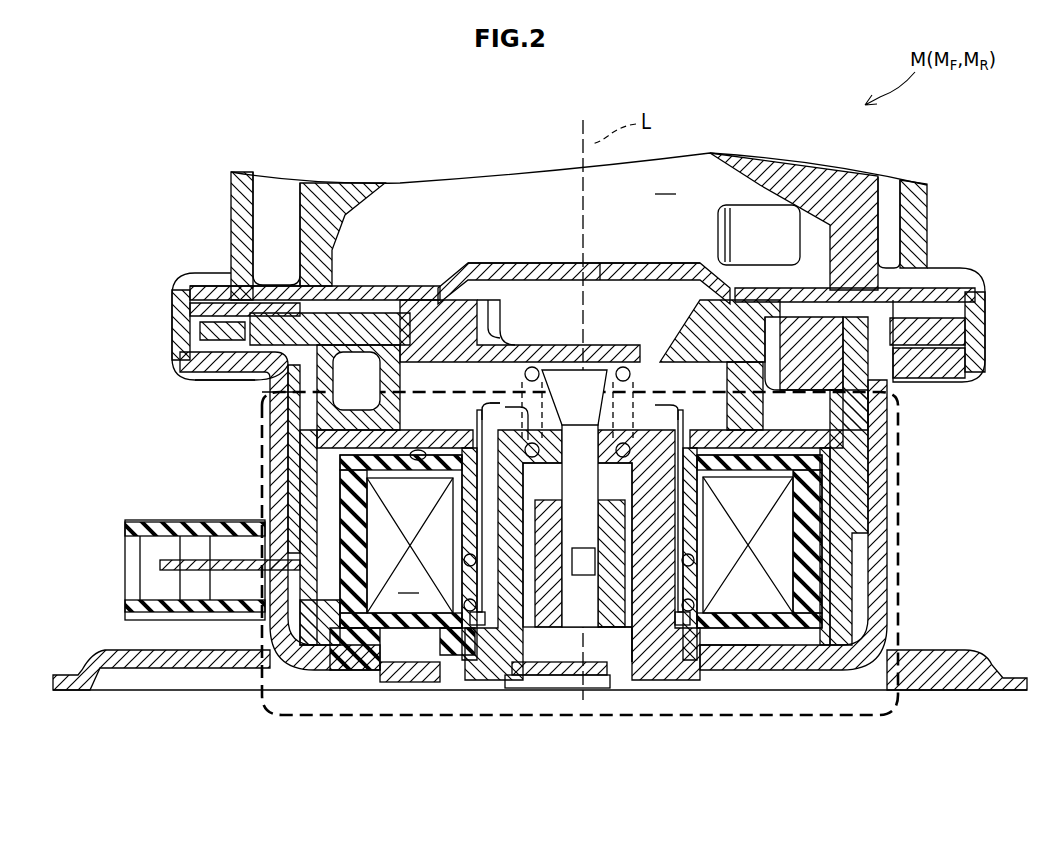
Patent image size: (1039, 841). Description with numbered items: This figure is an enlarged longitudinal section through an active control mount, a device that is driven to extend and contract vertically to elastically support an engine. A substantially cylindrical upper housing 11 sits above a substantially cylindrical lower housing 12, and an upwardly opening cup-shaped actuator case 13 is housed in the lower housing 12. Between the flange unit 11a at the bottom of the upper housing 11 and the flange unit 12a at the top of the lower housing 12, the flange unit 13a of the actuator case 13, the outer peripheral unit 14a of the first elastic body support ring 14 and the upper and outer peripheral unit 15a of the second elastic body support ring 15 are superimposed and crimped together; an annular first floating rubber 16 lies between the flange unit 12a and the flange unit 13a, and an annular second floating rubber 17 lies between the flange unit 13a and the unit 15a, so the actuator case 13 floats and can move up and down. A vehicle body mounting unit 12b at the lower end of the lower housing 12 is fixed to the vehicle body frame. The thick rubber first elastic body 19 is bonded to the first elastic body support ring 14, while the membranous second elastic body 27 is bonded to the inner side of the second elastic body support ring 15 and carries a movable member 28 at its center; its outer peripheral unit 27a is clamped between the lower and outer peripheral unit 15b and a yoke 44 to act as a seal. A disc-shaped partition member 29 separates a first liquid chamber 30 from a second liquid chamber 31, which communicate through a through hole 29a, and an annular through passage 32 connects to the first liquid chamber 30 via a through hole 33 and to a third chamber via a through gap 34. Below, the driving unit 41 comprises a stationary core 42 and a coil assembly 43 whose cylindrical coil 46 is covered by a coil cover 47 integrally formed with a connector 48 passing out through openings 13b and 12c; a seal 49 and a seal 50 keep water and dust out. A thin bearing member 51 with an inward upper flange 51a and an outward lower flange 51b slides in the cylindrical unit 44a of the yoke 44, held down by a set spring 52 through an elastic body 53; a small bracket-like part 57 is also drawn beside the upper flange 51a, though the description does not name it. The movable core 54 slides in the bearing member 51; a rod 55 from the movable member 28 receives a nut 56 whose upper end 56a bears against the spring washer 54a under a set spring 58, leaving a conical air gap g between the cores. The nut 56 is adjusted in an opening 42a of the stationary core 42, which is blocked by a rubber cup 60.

The upper housing 11 is at (199, 216).
The flange unit 11a is at (172, 310).
The lower housing 12 is at (901, 474).
The flange unit 12a is at (950, 355).
The vehicle body mounting unit 12b is at (975, 650).
The opening 12c is at (280, 440).
The actuator case 13 is at (866, 564).
The flange unit 13a is at (940, 328).
The opening 13b is at (300, 490).
The first elastic body support ring 14 is at (312, 235).
The outer peripheral unit 14a is at (200, 290).
The second elastic body support ring 15 is at (355, 300).
The upper and outer peripheral unit 15a is at (200, 330).
The lower and outer peripheral unit 15b is at (838, 395).
The first floating rubber 16 is at (205, 365).
The second floating rubber 17 is at (270, 400).
The first elastic body 19 is at (338, 198).
The second elastic body 27 is at (705, 320).
The outer peripheral unit 27a is at (830, 420).
The movable member 28 is at (505, 330).
The partition member 29 is at (532, 250).
The through hole 29a is at (595, 268).
The first liquid chamber 30 is at (665, 182).
The second liquid chamber 31 is at (453, 263).
The through passage 32 is at (273, 188).
The through hole 33 is at (762, 205).
The through gap 34 is at (890, 222).
The driving unit 41 is at (828, 718).
The stationary core 42 is at (721, 697).
The opening 42a is at (545, 675).
The coil assembly 43 is at (838, 521).
The yoke 44 is at (810, 445).
The cylindrical unit 44a is at (700, 503).
The coil 46 is at (410, 545).
The coil cover 47 is at (345, 640).
The connector 48 is at (165, 525).
The seal 49 is at (418, 450).
The seal 50 is at (400, 682).
The bearing member 51 is at (680, 425).
The upper flange 51a is at (492, 406).
The lower flange 51b is at (480, 625).
The set spring 52 is at (668, 625).
The elastic body 53 is at (688, 625).
The movable core 54 is at (475, 493).
The spring washer 54a is at (695, 488).
The rod 55 is at (595, 362).
The nut 56 is at (548, 600).
The upper end 56a is at (694, 535).
The spring clip 57 is at (505, 407).
The set spring 58 is at (632, 378).
The rubber cup 60 is at (588, 688).
The conical air gap g is at (650, 620).